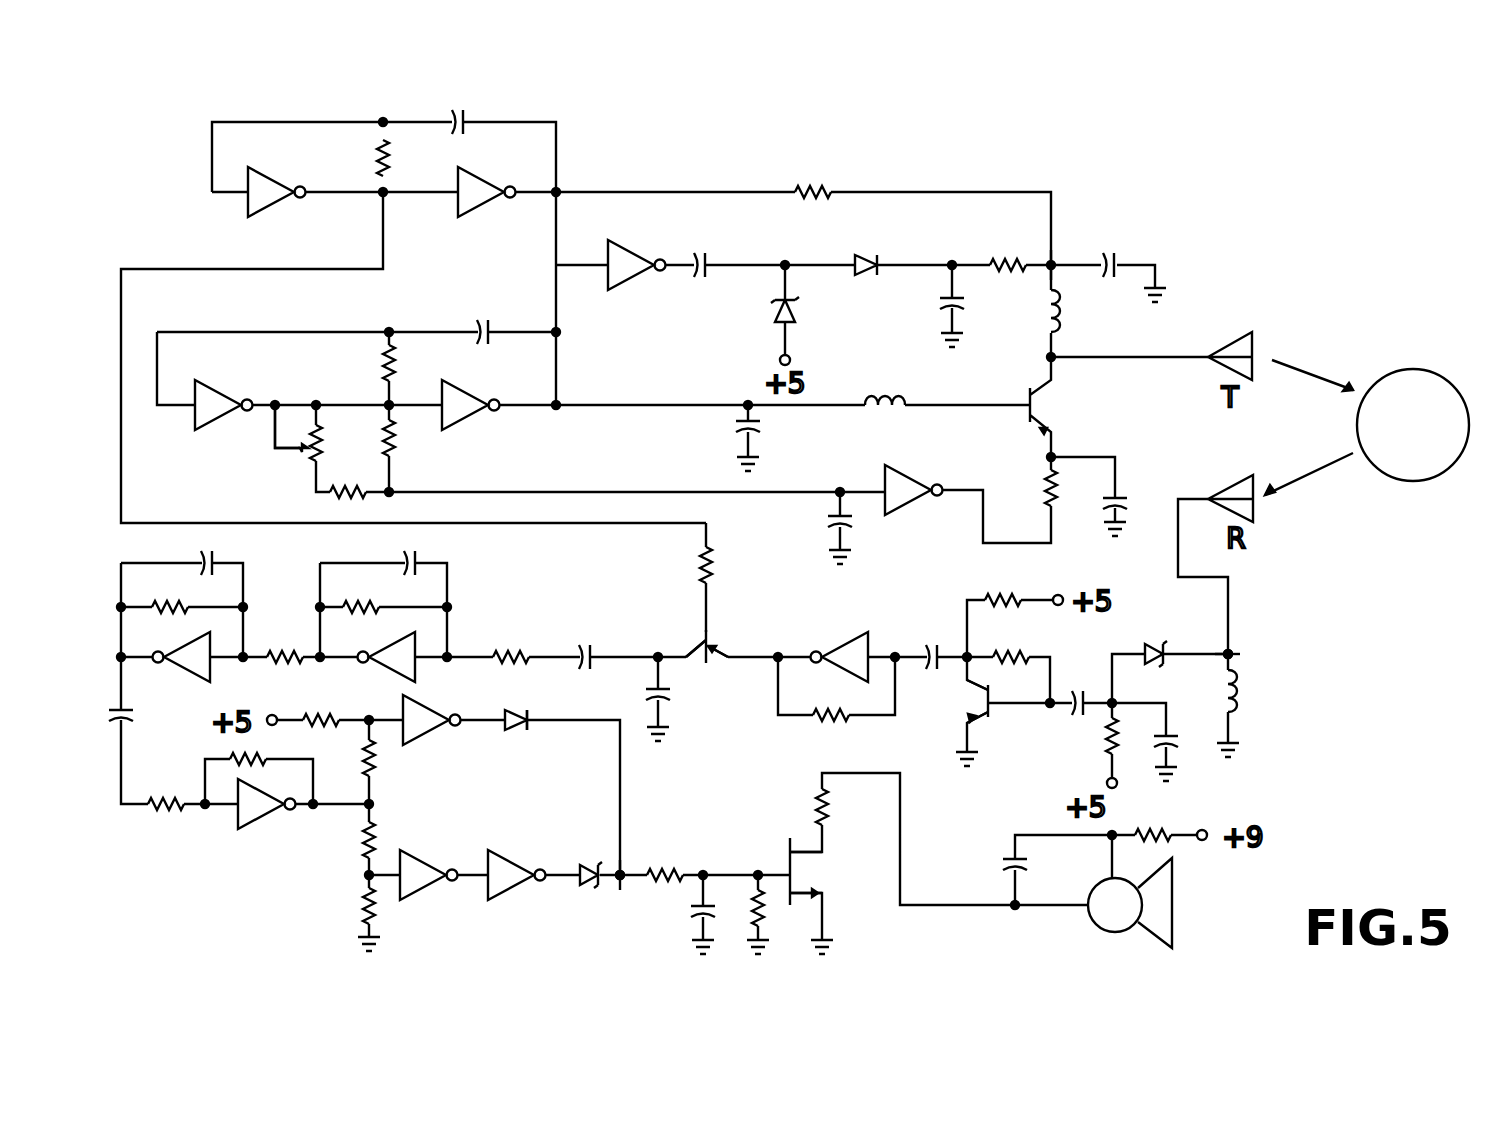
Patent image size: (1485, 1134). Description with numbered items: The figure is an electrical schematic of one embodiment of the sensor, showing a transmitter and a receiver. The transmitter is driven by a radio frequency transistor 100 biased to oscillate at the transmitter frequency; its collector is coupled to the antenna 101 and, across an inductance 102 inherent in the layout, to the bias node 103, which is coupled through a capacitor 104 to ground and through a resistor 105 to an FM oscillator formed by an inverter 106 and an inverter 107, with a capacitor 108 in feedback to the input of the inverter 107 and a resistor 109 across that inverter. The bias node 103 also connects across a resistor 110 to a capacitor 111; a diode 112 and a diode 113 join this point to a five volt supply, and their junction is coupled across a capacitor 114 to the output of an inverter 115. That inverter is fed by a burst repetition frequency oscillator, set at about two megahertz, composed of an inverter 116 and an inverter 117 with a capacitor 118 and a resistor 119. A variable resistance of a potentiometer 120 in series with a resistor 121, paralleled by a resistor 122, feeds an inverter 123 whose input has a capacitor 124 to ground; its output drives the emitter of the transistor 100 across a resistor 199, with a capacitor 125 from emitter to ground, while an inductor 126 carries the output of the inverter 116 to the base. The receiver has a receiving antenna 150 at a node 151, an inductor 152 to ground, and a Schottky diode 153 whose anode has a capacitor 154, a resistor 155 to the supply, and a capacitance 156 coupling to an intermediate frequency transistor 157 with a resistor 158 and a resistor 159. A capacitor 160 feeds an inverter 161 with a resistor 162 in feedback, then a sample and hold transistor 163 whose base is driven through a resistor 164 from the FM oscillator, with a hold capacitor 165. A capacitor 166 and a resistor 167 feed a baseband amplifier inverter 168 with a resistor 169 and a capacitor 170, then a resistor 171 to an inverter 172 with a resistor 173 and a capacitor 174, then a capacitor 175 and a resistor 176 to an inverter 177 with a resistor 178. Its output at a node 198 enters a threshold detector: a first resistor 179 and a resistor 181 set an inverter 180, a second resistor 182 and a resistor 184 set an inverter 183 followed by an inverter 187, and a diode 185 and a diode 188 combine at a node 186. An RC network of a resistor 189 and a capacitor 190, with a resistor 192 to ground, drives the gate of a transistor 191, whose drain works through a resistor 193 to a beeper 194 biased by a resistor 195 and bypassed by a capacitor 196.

The radio frequency transistor 100 is at (1050, 405).
The antenna 101 is at (1256, 345).
The inductance 102 is at (1062, 312).
The bias node 103 is at (1058, 258).
The capacitor 104 is at (1122, 258).
The resistor 105 is at (815, 188).
The inverter 106 is at (484, 208).
The inverter 107 is at (248, 205).
The capacitor 108 is at (470, 115).
The resistor 109 is at (383, 150).
The resistor 110 is at (1010, 258).
The capacitor 111 is at (962, 305).
The diode 112 is at (868, 256).
The diode 113 is at (770, 315).
The capacitor 114 is at (708, 258).
The inverter 115 is at (636, 283).
The inverter 116 is at (472, 422).
The inverter 117 is at (215, 392).
The capacitor 118 is at (475, 325).
The resistor 119 is at (383, 372).
The potentiometer 120 is at (303, 455).
The resistor 121 is at (345, 496).
The resistor 122 is at (396, 455).
The inverter 123 is at (922, 512).
The capacitor 124 is at (828, 525).
The capacitor 125 is at (1118, 497).
The inductor 126 is at (880, 395).
The receiving antenna 150 is at (1256, 505).
The node 151 is at (1235, 654).
The inductor 152 is at (1236, 692).
The Schottky diode 153 is at (1155, 650).
The capacitor 154 is at (1170, 725).
The resistor 155 is at (1122, 760).
The capacitance 156 is at (1075, 714).
The intermediate frequency transistor 157 is at (990, 713).
The resistor 158 is at (1020, 655).
The resistor 159 is at (1010, 598).
The capacitor 160 is at (935, 650).
The inverter 161 is at (850, 640).
The resistor 162 is at (830, 720).
The transistor 163 is at (722, 633).
The resistor 164 is at (712, 563).
The capacitor 165 is at (672, 700).
The capacitor 166 is at (600, 650).
The resistor 167 is at (520, 655).
The inverter 168 is at (412, 645).
The resistor 169 is at (375, 604).
The capacitor 170 is at (418, 556).
The resistor 171 is at (285, 650).
The inverter 172 is at (212, 670).
The resistor 173 is at (185, 604).
The capacitor 174 is at (216, 556).
The capacitor 175 is at (128, 714).
The resistor 176 is at (170, 810).
The inverter 177 is at (268, 824).
The resistor 178 is at (233, 757).
The first resistor 179 is at (422, 741).
The inverter 180 is at (510, 732).
The resistor 181 is at (322, 718).
The second resistor 182 is at (362, 842).
The inverter 183 is at (427, 893).
The resistor 184 is at (366, 922).
The diode 185 is at (532, 732).
The node 186 is at (622, 870).
The inverter 187 is at (512, 893).
The diode 188 is at (596, 890).
The resistor 189 is at (672, 870).
The capacitor 190 is at (697, 912).
The transistor 191 is at (790, 850).
The resistor 192 is at (770, 915).
The resistor 193 is at (828, 805).
The beeper 194 is at (1092, 915).
The resistor 195 is at (1178, 840).
The capacitor 196 is at (1010, 865).
The node 198 is at (376, 806).
The resistor 199 is at (1046, 490).